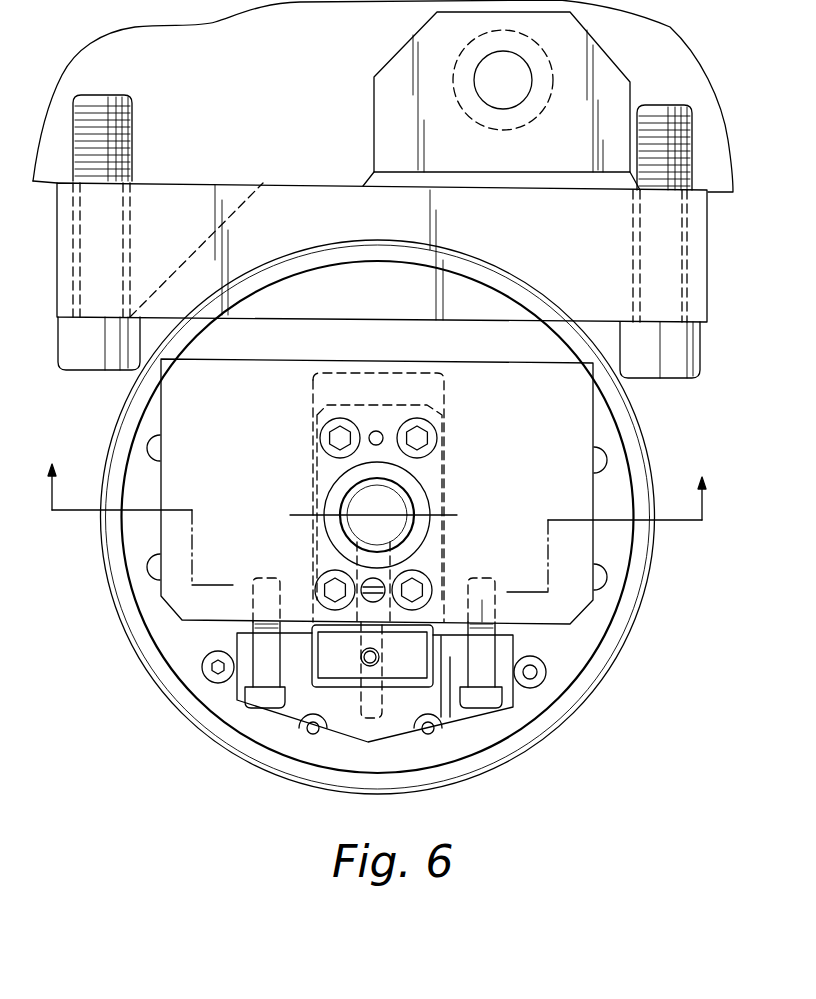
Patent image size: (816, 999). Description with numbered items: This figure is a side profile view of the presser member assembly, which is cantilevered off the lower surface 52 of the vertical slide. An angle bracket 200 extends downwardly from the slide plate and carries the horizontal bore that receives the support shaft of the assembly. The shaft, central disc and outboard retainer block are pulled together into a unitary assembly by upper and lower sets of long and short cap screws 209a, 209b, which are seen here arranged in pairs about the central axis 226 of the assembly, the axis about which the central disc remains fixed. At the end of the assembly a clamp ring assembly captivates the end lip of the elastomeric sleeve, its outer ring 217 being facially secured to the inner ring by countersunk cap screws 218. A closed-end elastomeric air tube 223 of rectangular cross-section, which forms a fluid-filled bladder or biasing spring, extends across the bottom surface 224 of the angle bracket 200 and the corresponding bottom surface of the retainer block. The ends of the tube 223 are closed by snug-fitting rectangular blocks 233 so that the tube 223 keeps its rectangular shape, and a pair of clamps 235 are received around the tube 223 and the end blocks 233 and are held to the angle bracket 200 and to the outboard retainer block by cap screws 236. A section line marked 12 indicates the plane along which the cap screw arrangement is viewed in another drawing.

The section line 12- 12 is at (384, 514).
The lower surface 52 is at (153, 185).
The angle bracket 200 is at (288, 280).
The long cap screws 209a is at (320, 436).
The short cap screws 209b is at (433, 428).
The outer ring 217 is at (192, 696).
The countersunk cap screws 218 is at (220, 684).
The elastomeric air tube 223 is at (375, 687).
The bottom surface 224 is at (193, 623).
The central axis 226 is at (382, 510).
The rectangular blocks 233 is at (357, 666).
The clamps 235 is at (513, 648).
The cap screws 236 is at (495, 613).